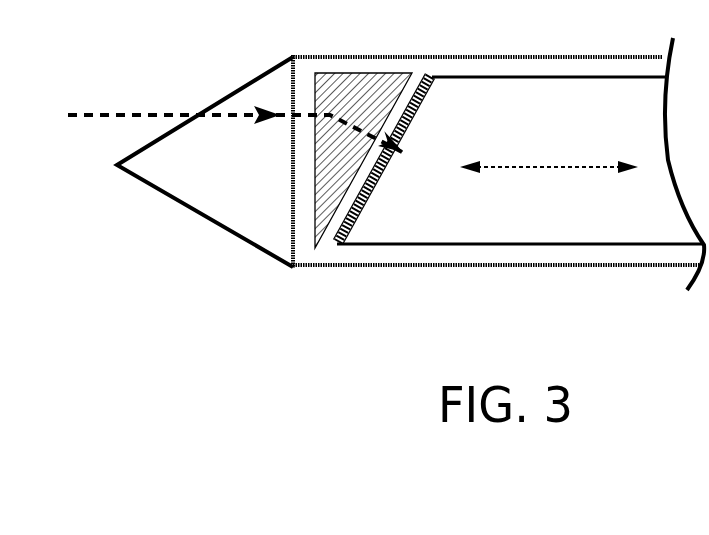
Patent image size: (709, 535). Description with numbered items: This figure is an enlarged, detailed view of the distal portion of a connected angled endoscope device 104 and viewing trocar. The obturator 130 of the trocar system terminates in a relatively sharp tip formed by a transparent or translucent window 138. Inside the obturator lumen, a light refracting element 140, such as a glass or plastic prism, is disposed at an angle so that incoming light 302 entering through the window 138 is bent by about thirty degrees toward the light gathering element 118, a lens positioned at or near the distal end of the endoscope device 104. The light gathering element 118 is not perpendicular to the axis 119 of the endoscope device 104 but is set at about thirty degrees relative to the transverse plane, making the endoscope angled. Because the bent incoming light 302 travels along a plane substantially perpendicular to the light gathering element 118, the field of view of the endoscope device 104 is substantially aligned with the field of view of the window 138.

The incoming light 302 is at (238, 120).
The light refracting element 140 is at (310, 140).
The light gathering element 118 is at (373, 138).
The endoscope device 104 is at (520, 155).
The axis 119 is at (553, 196).
The window 138 is at (201, 162).
The obturator 130 is at (496, 195).